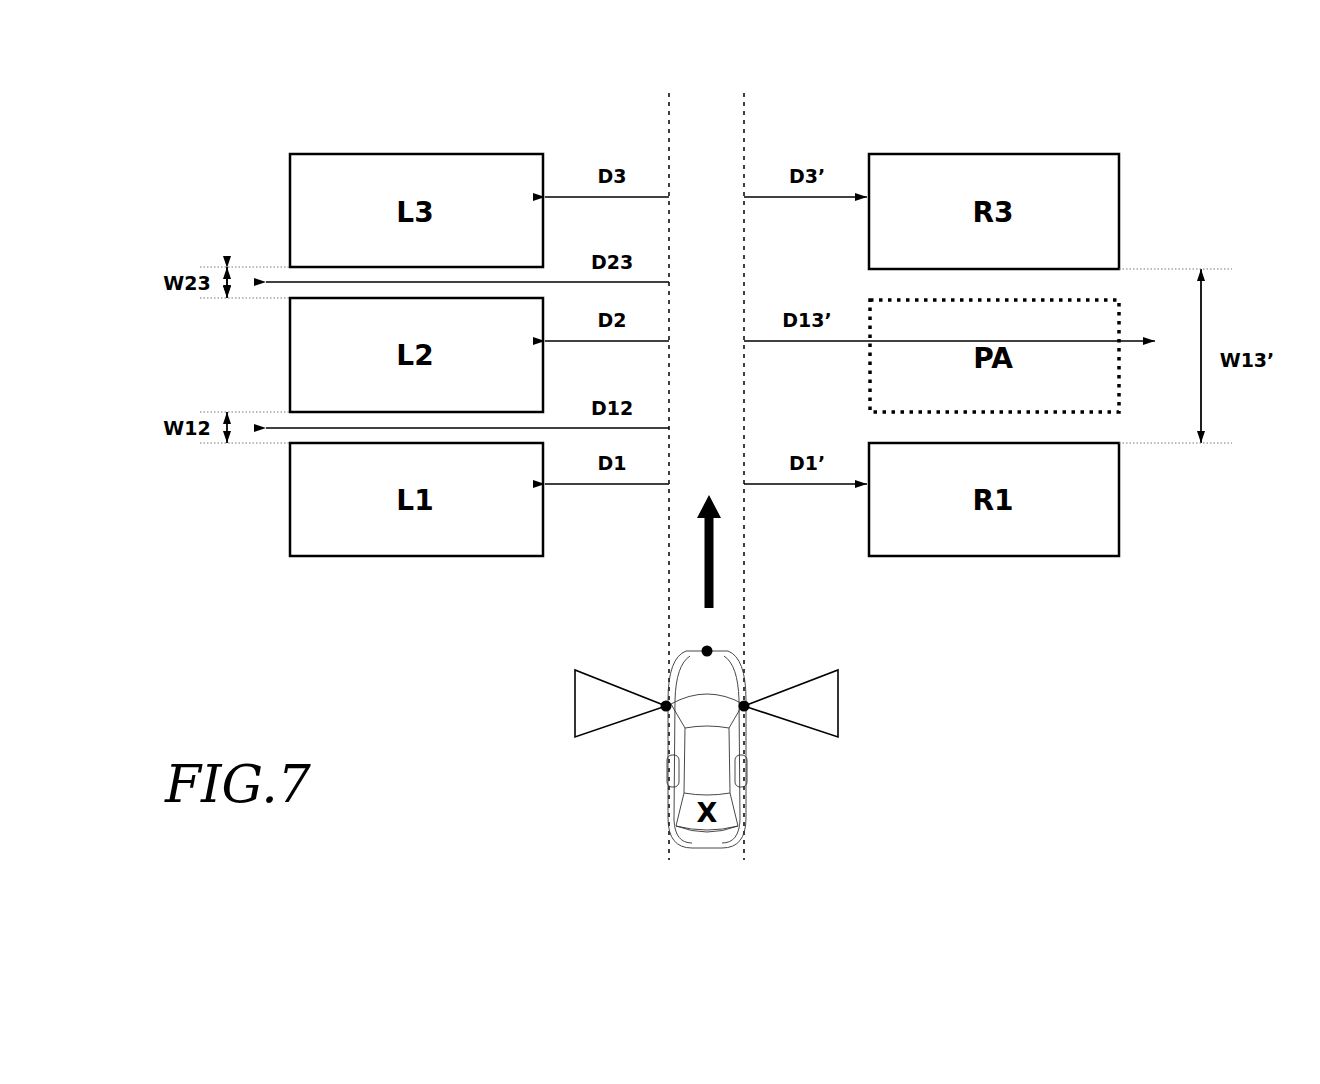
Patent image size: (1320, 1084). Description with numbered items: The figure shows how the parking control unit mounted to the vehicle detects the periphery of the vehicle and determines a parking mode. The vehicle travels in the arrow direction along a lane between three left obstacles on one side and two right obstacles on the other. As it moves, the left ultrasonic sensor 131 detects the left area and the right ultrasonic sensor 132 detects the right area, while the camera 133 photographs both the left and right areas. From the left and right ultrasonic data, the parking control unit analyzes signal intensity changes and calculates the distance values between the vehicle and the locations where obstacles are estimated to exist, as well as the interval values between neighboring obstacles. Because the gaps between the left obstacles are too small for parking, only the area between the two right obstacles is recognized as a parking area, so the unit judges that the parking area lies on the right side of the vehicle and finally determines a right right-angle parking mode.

The left ultrasonic sensor 131 is at (666, 706).
The right ultrasonic sensor 132 is at (744, 706).
The camera 133 is at (707, 651).